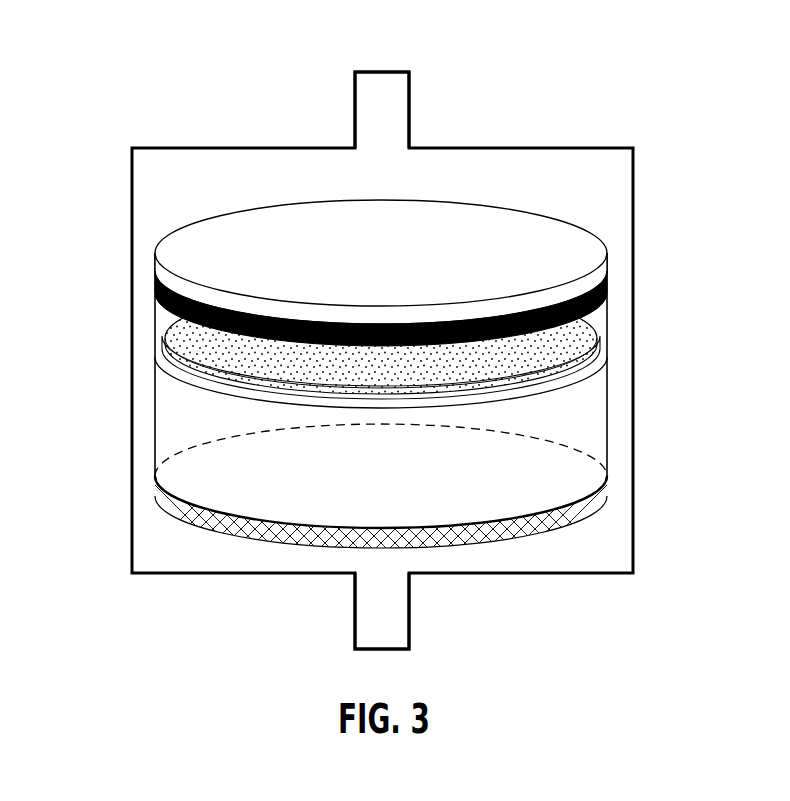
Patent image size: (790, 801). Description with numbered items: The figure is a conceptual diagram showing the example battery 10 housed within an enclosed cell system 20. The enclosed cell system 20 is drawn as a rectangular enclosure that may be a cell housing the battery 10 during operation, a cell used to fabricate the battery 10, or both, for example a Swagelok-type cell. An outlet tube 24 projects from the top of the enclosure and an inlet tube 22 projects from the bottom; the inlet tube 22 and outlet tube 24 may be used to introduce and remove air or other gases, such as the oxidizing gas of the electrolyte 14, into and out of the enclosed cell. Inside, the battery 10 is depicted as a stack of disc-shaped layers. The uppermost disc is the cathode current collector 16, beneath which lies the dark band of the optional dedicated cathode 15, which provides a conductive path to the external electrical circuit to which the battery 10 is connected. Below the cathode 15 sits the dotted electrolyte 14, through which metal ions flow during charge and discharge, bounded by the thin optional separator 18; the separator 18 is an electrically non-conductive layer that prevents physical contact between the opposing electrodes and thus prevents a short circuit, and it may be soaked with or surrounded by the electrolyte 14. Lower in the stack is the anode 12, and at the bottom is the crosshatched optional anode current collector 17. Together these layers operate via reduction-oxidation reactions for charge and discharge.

The battery 10 is at (159, 216).
The anode 12 is at (590, 412).
The electrolyte 14 is at (600, 353).
The cathode 15 is at (610, 292).
The cathode current collector 16 is at (603, 270).
The anode current collector 17 is at (608, 487).
The separator 18 is at (170, 325).
The enclosed cell system 20 is at (196, 91).
The inlet tube 22 is at (390, 608).
The outlet tube 24 is at (390, 110).